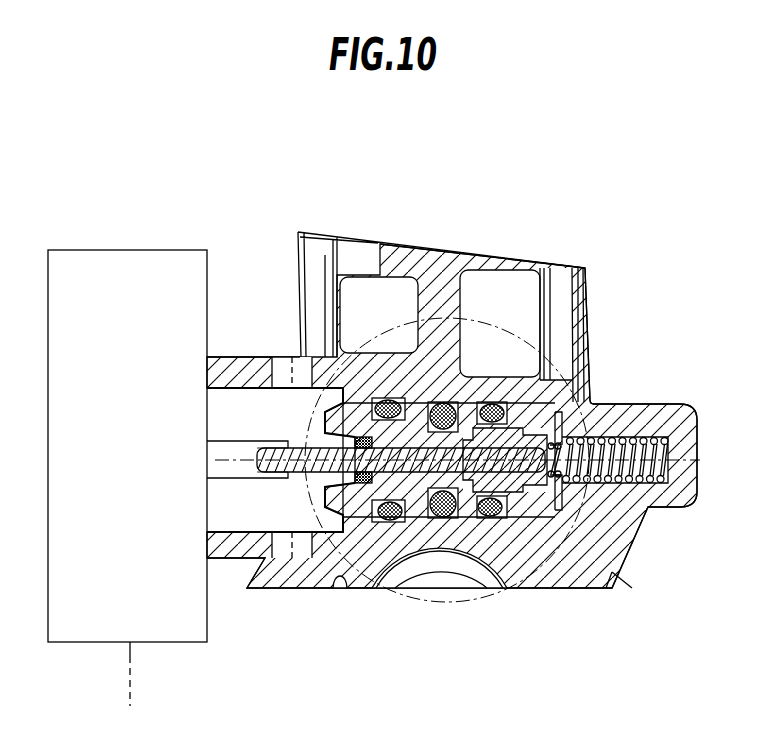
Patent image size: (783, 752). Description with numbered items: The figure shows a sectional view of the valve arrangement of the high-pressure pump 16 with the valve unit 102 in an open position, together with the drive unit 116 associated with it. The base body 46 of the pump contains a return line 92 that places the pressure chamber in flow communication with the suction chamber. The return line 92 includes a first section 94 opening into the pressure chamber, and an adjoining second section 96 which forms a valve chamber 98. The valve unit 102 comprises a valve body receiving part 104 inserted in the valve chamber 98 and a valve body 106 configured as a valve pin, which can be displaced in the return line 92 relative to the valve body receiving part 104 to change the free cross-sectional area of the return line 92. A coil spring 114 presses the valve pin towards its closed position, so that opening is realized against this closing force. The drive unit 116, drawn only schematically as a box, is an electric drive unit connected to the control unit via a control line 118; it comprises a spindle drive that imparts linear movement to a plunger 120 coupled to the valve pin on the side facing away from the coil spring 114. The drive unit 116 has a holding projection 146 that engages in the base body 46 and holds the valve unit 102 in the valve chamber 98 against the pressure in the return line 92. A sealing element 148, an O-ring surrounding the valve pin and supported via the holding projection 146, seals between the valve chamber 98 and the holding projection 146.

The high-pressure pump 16 is at (449, 221).
The base body 46 is at (577, 553).
The return line 92 is at (510, 436).
The first section 94 is at (610, 502).
The second section 96 is at (510, 483).
The valve chamber 98 is at (495, 497).
The valve unit 102 is at (472, 430).
The valve body receiving part 104 is at (432, 410).
The valve body 106 is at (405, 565).
The coil spring 114 is at (650, 438).
The drive unit 116 is at (109, 511).
The control line 118 is at (140, 665).
The plunger 120 is at (237, 452).
The holding projection 146 is at (282, 410).
The sealing element 148 is at (362, 437).